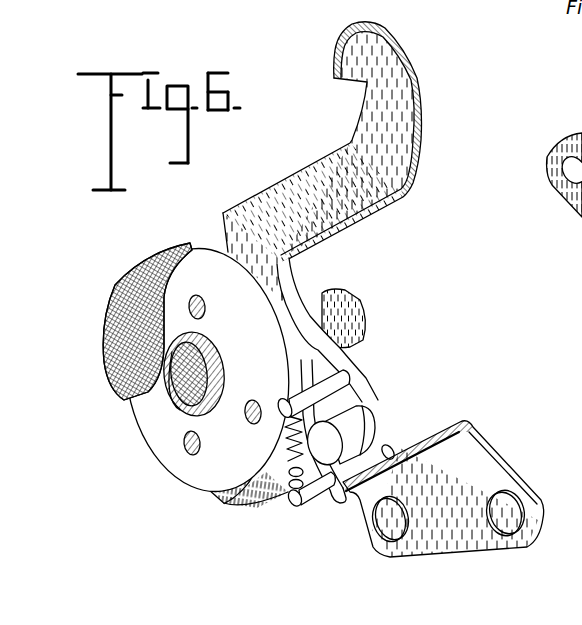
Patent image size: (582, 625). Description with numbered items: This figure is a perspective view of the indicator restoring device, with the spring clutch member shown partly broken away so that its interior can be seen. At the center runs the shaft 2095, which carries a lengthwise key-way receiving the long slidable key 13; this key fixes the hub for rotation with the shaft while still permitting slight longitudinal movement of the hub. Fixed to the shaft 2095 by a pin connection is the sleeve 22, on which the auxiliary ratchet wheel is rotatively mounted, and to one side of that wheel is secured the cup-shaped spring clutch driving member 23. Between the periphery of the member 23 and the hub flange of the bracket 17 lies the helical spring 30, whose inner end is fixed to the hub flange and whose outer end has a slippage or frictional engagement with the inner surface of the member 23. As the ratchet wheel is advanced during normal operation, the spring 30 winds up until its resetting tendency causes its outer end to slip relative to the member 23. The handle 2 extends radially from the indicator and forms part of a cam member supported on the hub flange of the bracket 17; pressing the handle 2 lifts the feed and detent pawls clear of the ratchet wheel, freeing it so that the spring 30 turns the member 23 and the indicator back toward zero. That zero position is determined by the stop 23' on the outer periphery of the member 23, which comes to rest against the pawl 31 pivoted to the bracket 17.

The handle 2 is at (378, 193).
The key 13 is at (168, 384).
The bracket 17 is at (340, 400).
The sleeve 22 is at (207, 360).
The spring clutch driving member 23 is at (317, 330).
The stop 23' is at (262, 479).
The helical spring 30 is at (110, 338).
The pawl 31 is at (284, 498).
The shaft 2095 is at (170, 405).